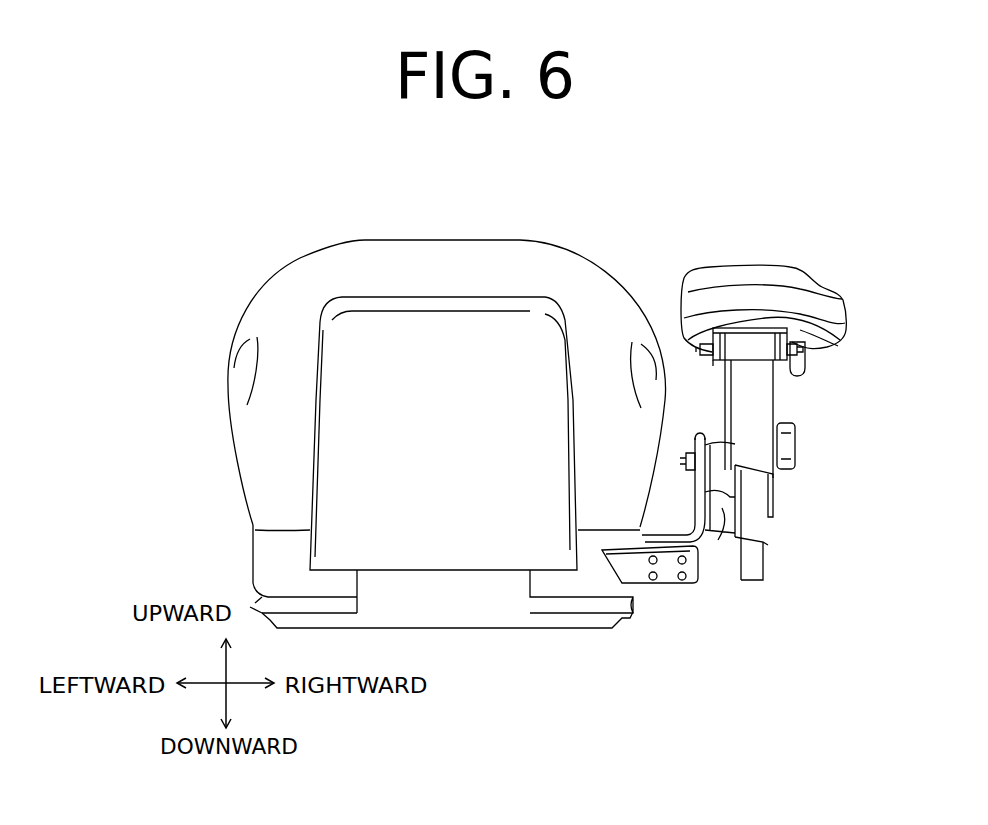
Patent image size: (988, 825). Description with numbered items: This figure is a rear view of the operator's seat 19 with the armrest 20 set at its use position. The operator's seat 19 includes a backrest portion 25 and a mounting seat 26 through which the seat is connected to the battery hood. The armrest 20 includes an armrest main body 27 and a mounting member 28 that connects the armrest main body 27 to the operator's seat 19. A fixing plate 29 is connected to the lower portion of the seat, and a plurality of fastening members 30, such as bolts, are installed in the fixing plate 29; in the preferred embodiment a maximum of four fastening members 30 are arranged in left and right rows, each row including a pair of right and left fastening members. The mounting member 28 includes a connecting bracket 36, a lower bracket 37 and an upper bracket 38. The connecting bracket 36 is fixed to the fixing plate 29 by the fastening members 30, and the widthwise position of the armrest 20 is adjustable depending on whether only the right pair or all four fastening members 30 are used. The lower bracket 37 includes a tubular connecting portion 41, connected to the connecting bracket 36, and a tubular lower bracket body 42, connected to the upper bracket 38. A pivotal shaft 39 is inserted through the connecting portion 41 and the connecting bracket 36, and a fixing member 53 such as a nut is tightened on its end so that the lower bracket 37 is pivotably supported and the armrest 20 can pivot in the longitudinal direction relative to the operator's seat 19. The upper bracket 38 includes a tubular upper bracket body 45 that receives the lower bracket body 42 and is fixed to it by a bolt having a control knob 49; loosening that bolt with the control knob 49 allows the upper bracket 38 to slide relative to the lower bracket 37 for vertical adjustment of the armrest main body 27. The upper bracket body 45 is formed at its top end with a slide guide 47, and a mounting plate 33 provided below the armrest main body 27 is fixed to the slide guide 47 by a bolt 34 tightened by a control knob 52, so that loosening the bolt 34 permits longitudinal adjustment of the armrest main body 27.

The operator's seat 19 is at (260, 226).
The armrest 20 is at (660, 215).
The backrest portion 25 is at (391, 242).
The mounting seat 26 is at (403, 628).
The armrest main body 27 is at (840, 303).
The mounting member 28 is at (842, 559).
The fixing plate 29 is at (650, 559).
The fastening members 30 is at (680, 565).
The mounting plate 33 is at (737, 330).
The bolt 34 is at (832, 338).
The connecting bracket 36 is at (695, 500).
The lower bracket 37 is at (765, 537).
The upper bracket 38 is at (775, 390).
The pivotal shaft 39 is at (683, 463).
The connecting portion 41 is at (722, 525).
The lower bracket body 42 is at (770, 506).
The upper bracket body 45 is at (760, 426).
The slide guide 47 is at (718, 362).
The control knob 49 is at (795, 441).
The control knob 52 is at (808, 368).
The fixing member 53 is at (697, 442).